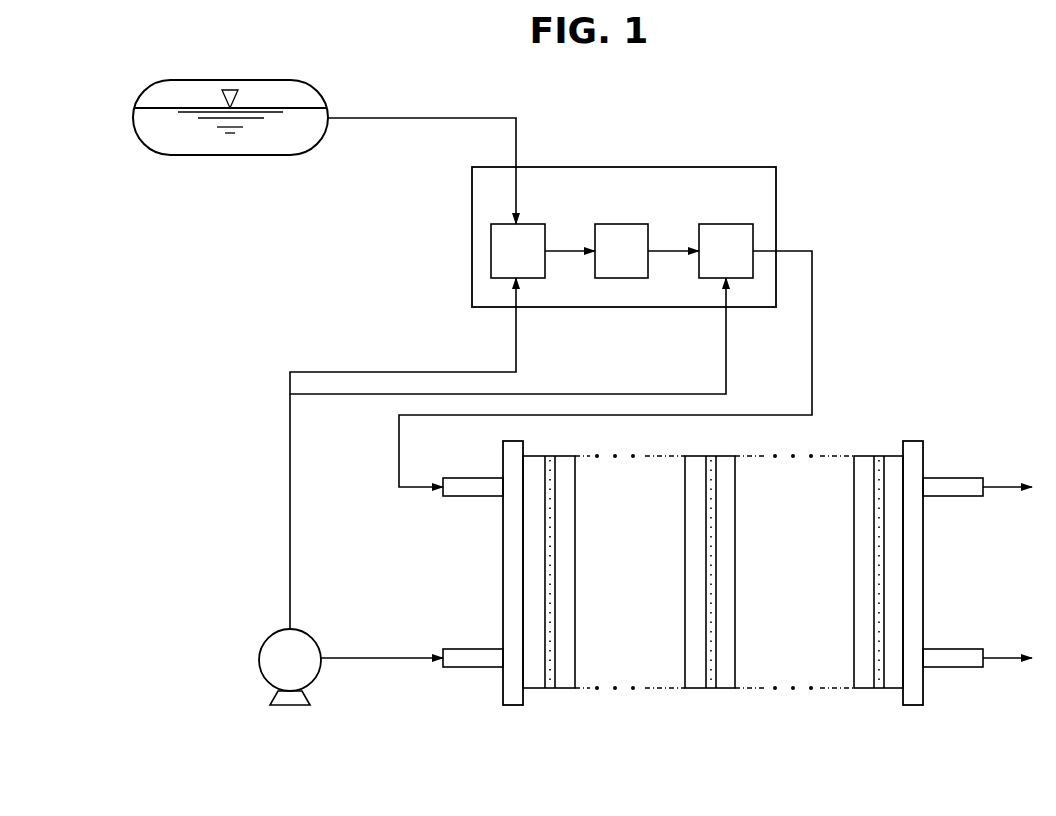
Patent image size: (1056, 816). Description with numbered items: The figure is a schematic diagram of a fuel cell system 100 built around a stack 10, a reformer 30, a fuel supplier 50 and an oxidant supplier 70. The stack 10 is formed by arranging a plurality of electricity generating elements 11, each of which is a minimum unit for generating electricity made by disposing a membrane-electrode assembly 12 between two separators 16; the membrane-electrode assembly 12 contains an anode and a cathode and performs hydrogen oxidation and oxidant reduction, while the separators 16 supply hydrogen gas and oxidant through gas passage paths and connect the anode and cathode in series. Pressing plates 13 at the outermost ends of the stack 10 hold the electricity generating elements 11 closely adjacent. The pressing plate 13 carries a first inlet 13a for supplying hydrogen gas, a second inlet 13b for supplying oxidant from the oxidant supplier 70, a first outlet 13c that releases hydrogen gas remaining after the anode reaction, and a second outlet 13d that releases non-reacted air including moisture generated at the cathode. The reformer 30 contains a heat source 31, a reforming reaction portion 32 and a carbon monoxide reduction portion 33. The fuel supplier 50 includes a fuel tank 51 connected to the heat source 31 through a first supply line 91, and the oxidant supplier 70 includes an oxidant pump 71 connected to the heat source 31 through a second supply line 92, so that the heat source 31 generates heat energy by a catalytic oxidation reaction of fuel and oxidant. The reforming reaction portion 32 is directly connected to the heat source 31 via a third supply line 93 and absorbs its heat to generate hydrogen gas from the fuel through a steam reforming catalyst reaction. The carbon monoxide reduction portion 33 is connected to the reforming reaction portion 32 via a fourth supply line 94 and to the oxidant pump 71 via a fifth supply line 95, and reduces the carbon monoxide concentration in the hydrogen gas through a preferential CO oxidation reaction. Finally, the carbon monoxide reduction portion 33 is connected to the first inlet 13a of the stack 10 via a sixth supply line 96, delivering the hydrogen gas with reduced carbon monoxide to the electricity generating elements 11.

The fuel cell system 100 is at (969, 137).
The stack 10 is at (741, 625).
The electricity generating element 11 is at (713, 633).
The membrane-electrode assembly 12 is at (712, 690).
The pressing plate 13 is at (512, 706).
The first inlet 13a is at (470, 478).
The second inlet 13b is at (480, 649).
The first outlet 13c is at (955, 649).
The second outlet 13d is at (955, 478).
The separator 16 is at (696, 690).
The reformer 30 is at (757, 157).
The heat source 31 is at (528, 224).
The reforming reaction portion 32 is at (621, 224).
The carbon monoxide reduction portion 33 is at (727, 224).
The fuel supplier 50 is at (230, 139).
The fuel tank 51 is at (200, 80).
The oxidant supplier 70 is at (326, 658).
The oxidant pump 71 is at (300, 630).
The first supply line 91 is at (513, 110).
The second supply line 92 is at (345, 372).
The third supply line 93 is at (558, 251).
The fourth supply line 94 is at (661, 251).
The fifth supply line 95 is at (726, 355).
The sixth supply line 96 is at (812, 305).